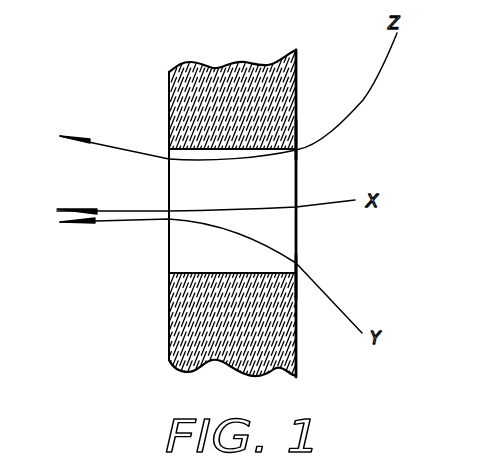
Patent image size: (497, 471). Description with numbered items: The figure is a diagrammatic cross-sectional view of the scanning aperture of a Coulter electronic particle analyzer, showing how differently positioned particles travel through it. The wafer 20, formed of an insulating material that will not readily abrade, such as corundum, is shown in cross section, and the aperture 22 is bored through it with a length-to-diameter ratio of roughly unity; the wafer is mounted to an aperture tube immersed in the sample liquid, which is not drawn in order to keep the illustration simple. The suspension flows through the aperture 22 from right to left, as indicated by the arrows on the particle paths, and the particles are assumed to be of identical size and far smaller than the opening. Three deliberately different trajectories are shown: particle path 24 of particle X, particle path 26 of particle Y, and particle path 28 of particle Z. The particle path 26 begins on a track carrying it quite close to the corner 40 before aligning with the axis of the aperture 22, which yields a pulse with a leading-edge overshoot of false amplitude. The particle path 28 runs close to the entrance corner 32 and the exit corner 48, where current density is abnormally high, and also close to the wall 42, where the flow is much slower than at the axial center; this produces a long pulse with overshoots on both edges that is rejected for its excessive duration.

The wafer 20 is at (283, 107).
The aperture 22 is at (203, 238).
The particle path X 24 is at (148, 211).
The particle path Y 26 is at (148, 222).
The particle path Z 28 is at (137, 150).
The entrance corner 32 is at (299, 148).
The corner 40 is at (297, 277).
The wall 42 is at (242, 150).
The exit corner 48 is at (169, 141).